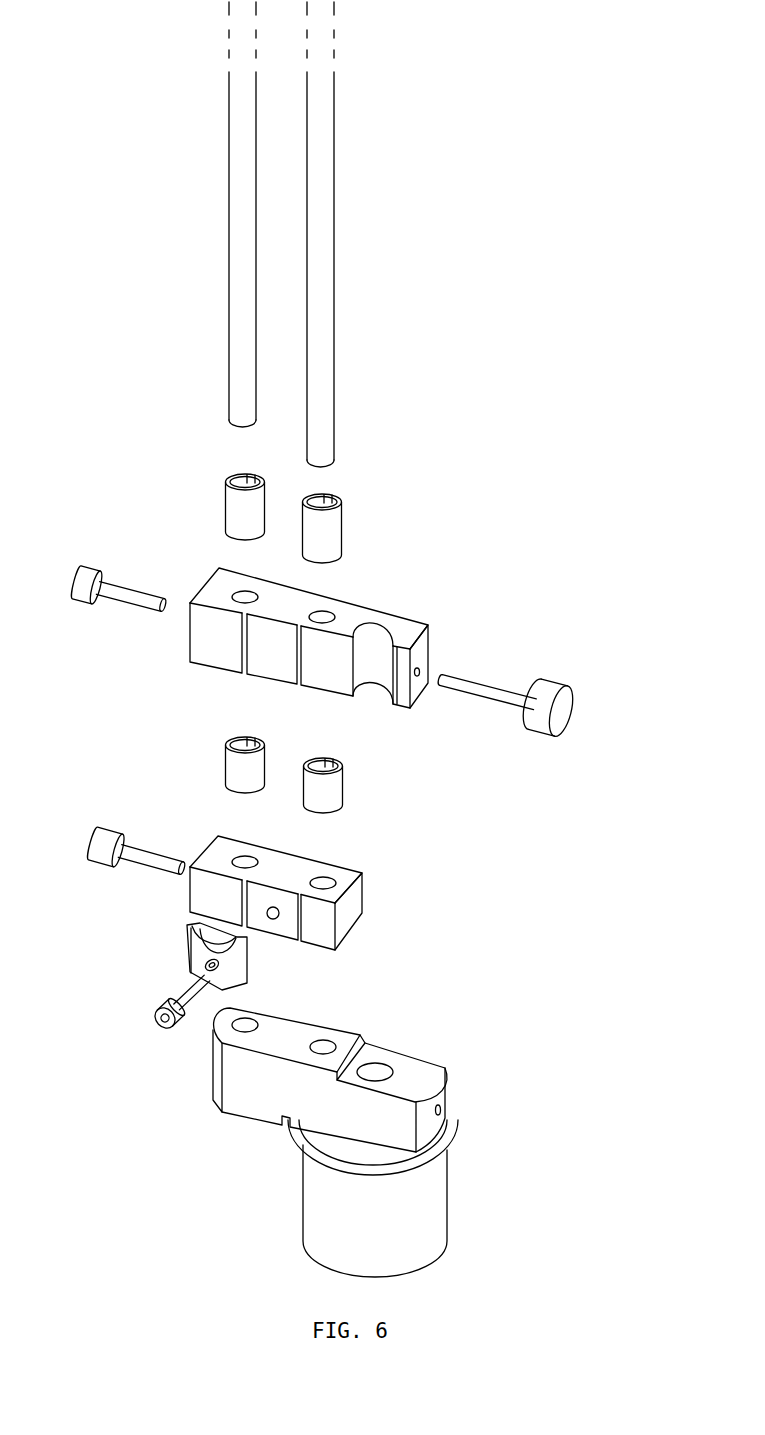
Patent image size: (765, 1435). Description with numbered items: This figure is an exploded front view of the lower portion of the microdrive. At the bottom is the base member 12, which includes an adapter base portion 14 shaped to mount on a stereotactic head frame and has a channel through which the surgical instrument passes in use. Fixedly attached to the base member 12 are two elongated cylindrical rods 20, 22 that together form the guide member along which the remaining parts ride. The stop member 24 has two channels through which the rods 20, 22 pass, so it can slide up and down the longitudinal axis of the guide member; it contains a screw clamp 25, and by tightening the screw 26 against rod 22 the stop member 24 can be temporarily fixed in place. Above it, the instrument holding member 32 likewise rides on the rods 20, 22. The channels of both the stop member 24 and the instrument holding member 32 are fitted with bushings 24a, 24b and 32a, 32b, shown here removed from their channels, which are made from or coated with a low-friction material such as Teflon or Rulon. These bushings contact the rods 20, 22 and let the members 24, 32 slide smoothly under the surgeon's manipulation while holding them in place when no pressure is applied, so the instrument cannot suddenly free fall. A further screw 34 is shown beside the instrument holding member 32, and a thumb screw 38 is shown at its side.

The base member 12 is at (392, 1214).
The adapter base portion 14 is at (440, 1255).
The elongated cylindrical rod 20 is at (338, 365).
The elongated cylindrical rod 22 is at (228, 348).
The stop member 24 is at (362, 873).
The bushing 24a is at (343, 790).
The bushing 24b is at (224, 771).
The screw clamp 25 is at (160, 953).
The screw 26 is at (87, 851).
The instrument holding member 32 is at (403, 617).
The bushing 32a is at (343, 538).
The bushing 32b is at (225, 511).
The set screw 34 is at (72, 587).
The thumb screw 38 is at (582, 690).